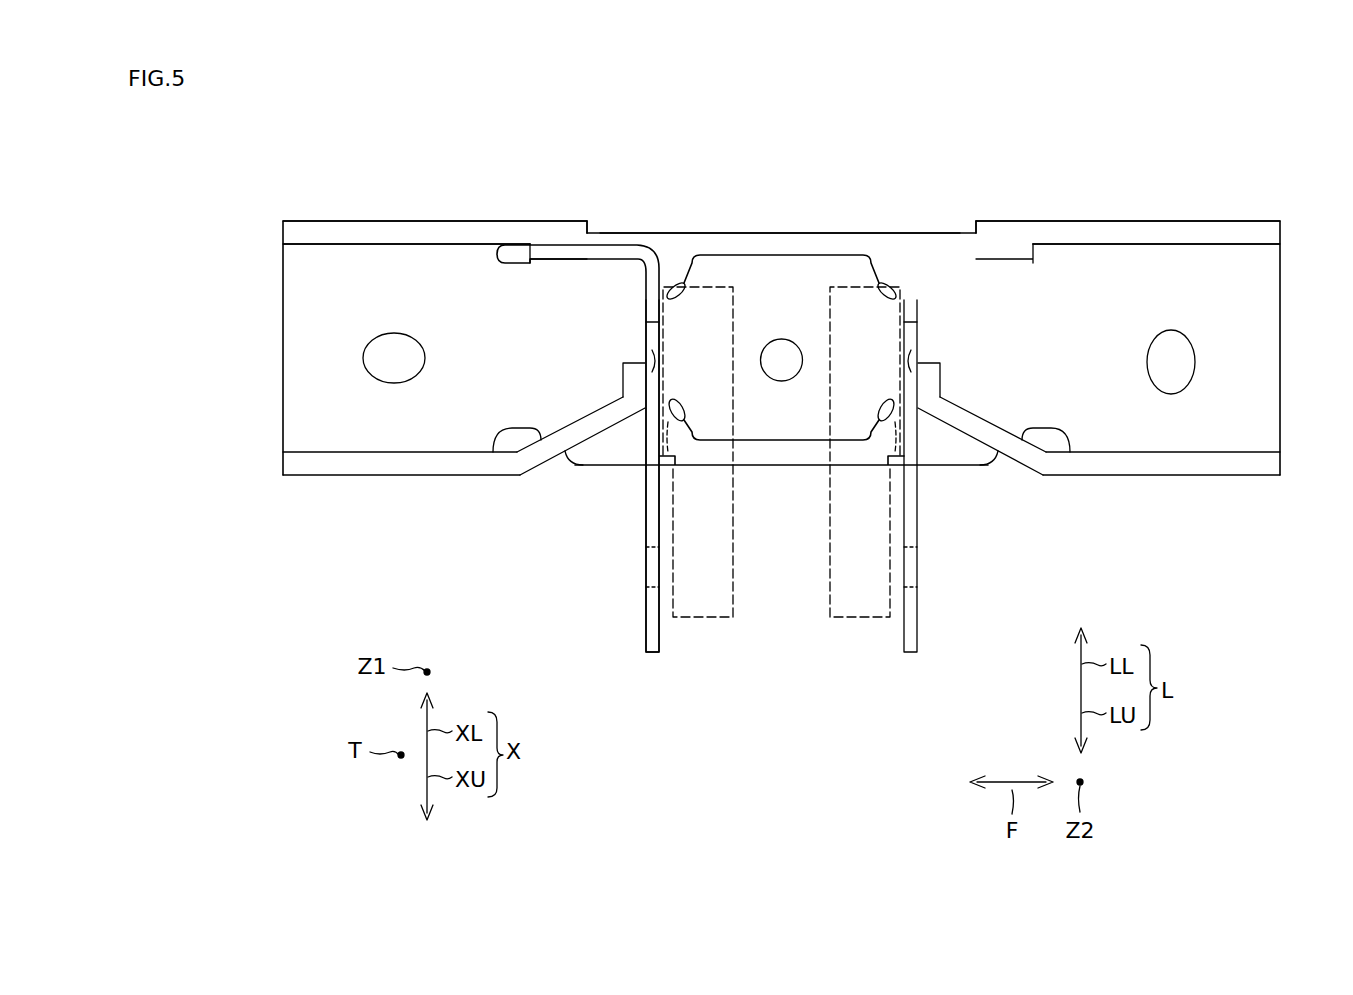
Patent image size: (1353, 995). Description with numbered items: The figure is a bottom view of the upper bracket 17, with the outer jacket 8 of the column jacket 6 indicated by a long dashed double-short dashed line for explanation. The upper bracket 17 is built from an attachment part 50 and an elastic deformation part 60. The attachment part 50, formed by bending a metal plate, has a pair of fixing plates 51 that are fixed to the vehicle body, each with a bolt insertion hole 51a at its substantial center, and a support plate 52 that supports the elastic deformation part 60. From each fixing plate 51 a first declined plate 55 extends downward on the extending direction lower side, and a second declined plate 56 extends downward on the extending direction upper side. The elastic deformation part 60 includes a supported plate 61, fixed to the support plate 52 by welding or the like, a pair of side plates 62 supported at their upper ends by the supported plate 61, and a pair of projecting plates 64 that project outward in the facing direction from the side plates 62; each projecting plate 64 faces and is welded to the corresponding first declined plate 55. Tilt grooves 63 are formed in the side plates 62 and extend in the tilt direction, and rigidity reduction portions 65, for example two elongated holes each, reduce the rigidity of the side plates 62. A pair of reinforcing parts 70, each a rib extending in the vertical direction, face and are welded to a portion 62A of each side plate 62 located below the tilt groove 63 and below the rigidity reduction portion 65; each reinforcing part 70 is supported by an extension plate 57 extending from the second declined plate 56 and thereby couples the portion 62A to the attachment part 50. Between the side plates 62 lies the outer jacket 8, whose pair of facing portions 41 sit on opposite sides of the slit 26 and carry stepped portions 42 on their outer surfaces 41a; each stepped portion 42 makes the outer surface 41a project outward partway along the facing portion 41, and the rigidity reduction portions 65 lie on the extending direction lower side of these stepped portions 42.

The upper bracket 17 is at (1125, 185).
The attachment part 50 is at (806, 222).
The fixing plate 51 is at (307, 287).
The bolt insertion hole 51a is at (421, 340).
The support plate 52 is at (841, 240).
The first declined plate 55 is at (378, 226).
The second declined plate 56 is at (361, 468).
The extension plate 57 is at (589, 435).
The elastic deformation part 60 is at (745, 243).
The supported plate 61 is at (780, 252).
The side plate 62 is at (645, 634).
The portion of side plate 62A is at (650, 352).
The tilt groove 63 is at (648, 575).
The projecting plate 64 is at (548, 250).
The rigidity reduction portion 65 is at (675, 425).
The reinforcing part 70 is at (630, 381).
The facing portion 41 is at (703, 317).
The outer surface 41a is at (652, 328).
The stepped portion 42 is at (688, 423).
The outer jacket 8 is at (775, 230).
The column jacket 6 is at (673, 279).
The slit 26 is at (782, 580).